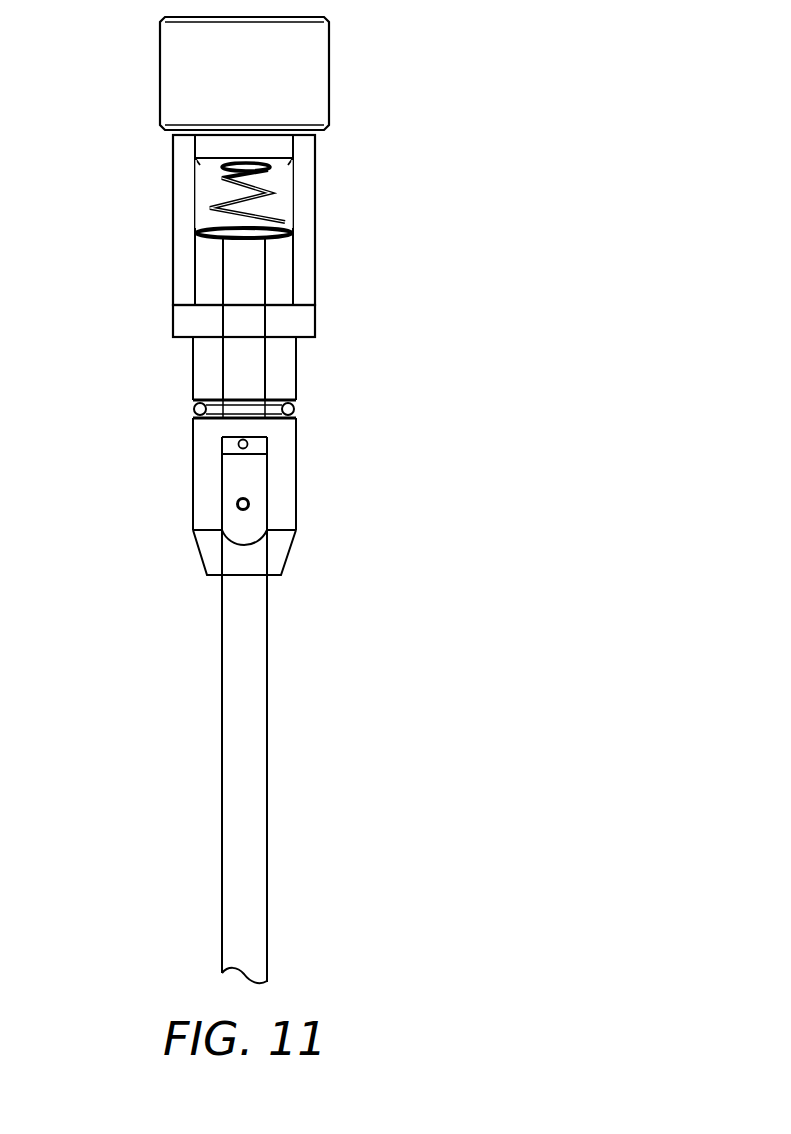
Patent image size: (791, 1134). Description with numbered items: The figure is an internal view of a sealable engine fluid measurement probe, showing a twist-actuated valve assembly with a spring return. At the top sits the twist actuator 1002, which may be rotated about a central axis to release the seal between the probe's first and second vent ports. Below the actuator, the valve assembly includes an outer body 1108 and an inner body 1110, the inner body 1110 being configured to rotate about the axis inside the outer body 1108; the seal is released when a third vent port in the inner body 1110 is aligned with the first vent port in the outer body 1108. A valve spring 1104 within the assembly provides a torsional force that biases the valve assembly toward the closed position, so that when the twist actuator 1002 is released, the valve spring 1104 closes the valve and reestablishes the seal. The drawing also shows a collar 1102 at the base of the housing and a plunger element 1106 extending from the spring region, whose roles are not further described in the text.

The twist actuator 1002 is at (330, 57).
The collar 1102 is at (315, 322).
The valve spring 1104 is at (288, 222).
The plunger 1106 is at (267, 283).
The outer body 1108 is at (173, 222).
The inner body 1110 is at (198, 166).